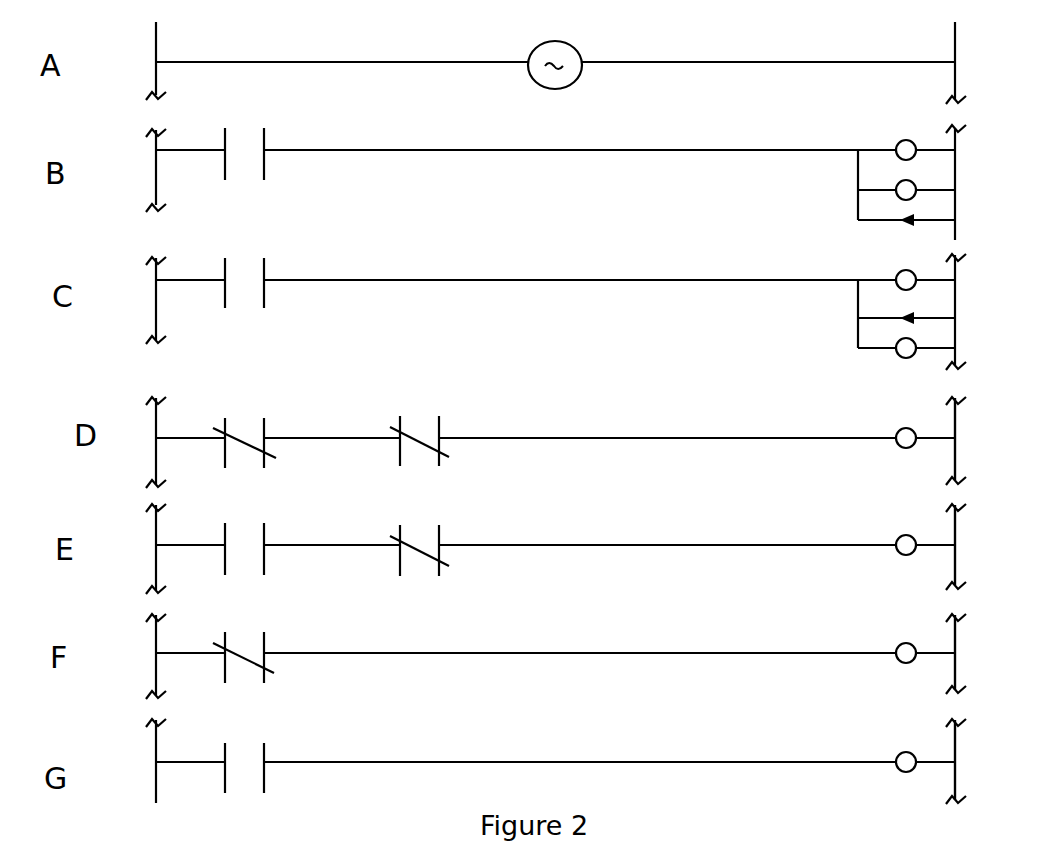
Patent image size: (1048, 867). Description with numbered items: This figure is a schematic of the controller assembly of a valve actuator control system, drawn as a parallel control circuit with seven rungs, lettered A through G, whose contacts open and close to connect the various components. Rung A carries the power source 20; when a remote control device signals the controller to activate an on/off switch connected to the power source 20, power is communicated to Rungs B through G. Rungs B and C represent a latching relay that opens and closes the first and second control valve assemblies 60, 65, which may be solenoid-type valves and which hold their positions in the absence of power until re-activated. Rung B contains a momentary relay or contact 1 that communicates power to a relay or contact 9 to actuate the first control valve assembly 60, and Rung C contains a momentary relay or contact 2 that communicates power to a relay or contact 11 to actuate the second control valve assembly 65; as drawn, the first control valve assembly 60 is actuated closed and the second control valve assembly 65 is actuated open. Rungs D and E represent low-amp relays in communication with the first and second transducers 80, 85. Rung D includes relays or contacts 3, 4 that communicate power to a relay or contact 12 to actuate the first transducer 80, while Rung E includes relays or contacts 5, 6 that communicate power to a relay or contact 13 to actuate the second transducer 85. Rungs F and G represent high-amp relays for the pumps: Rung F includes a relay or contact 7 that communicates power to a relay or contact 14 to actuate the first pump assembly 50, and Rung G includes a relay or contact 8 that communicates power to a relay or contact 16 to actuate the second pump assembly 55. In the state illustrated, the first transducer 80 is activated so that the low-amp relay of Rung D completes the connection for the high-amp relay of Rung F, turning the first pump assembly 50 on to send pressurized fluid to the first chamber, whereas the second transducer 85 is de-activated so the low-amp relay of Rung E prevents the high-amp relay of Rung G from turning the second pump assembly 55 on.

The momentary relay or contact 1 is at (264, 140).
The momentary relay or contact 2 is at (264, 270).
The relay or contact 3 is at (264, 428).
The relay or contact 4 is at (441, 424).
The relay or contact 5 is at (264, 535).
The relay or contact 6 is at (441, 532).
The relay or contact 7 is at (264, 643).
The relay or contact 8 is at (264, 753).
The relay or contact 9 is at (852, 173).
The relay or contact 11 is at (853, 302).
The relay or contact 12 is at (898, 446).
The relay or contact 13 is at (898, 554).
The relay or contact 14 is at (898, 662).
The relay or contact 16 is at (898, 771).
The power source 20 is at (588, 50).
The first pump assembly 50 is at (968, 654).
The second pump assembly 55 is at (968, 755).
The first control valve assembly 60 is at (968, 204).
The second control valve assembly 65 is at (968, 329).
The first transducer 80 is at (968, 432).
The second transducer 85 is at (968, 542).